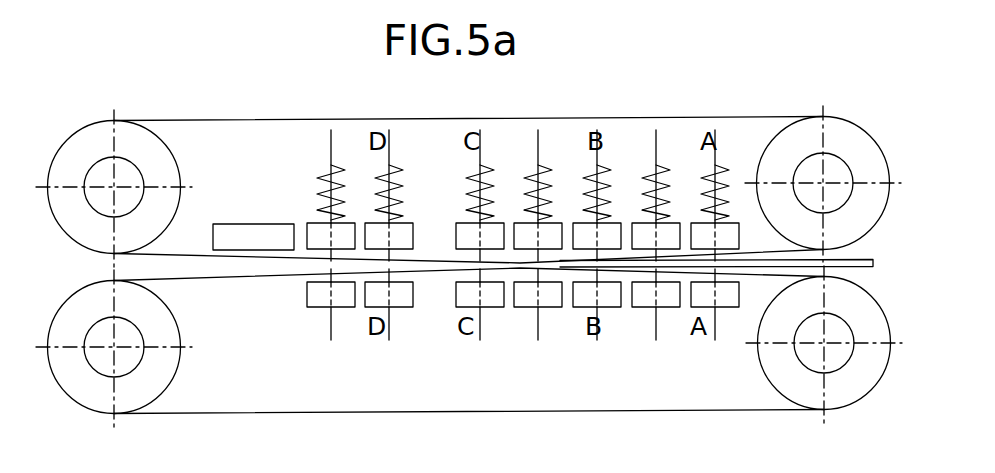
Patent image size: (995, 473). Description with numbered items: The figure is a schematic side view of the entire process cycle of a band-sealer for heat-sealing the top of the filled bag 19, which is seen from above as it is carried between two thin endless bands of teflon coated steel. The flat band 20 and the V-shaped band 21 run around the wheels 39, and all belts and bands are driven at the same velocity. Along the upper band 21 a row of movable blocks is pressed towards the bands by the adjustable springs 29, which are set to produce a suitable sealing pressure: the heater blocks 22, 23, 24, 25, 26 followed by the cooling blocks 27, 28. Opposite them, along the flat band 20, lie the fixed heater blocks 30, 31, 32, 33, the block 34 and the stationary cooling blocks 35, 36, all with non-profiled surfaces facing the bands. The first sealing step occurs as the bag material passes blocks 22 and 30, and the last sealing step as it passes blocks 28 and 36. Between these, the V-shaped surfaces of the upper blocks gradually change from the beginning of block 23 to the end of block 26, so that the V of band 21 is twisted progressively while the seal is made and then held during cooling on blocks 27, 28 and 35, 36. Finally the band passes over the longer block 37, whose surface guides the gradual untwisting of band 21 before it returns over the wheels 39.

The top of the filled bag 19 is at (846, 258).
The flat band 20 is at (187, 283).
The V-shaped band 21 is at (184, 251).
The heater block 22 is at (722, 240).
The heater block 23 is at (661, 238).
The heater block 24 is at (603, 238).
The heater block 25 is at (543, 238).
The heater block 26 is at (483, 238).
The cooling block 27 is at (400, 238).
The cooling block 28 is at (336, 238).
The adjustable springs 29 is at (383, 161).
The heater block 30 is at (719, 303).
The heater block 31 is at (664, 300).
The heater block 32 is at (605, 300).
The heater block 33 is at (545, 300).
The block 34 is at (489, 300).
The stationary cooling block 35 is at (401, 300).
The stationary cooling block 36 is at (337, 300).
The longer block 37 is at (253, 240).
The wheels 39 is at (82, 148).